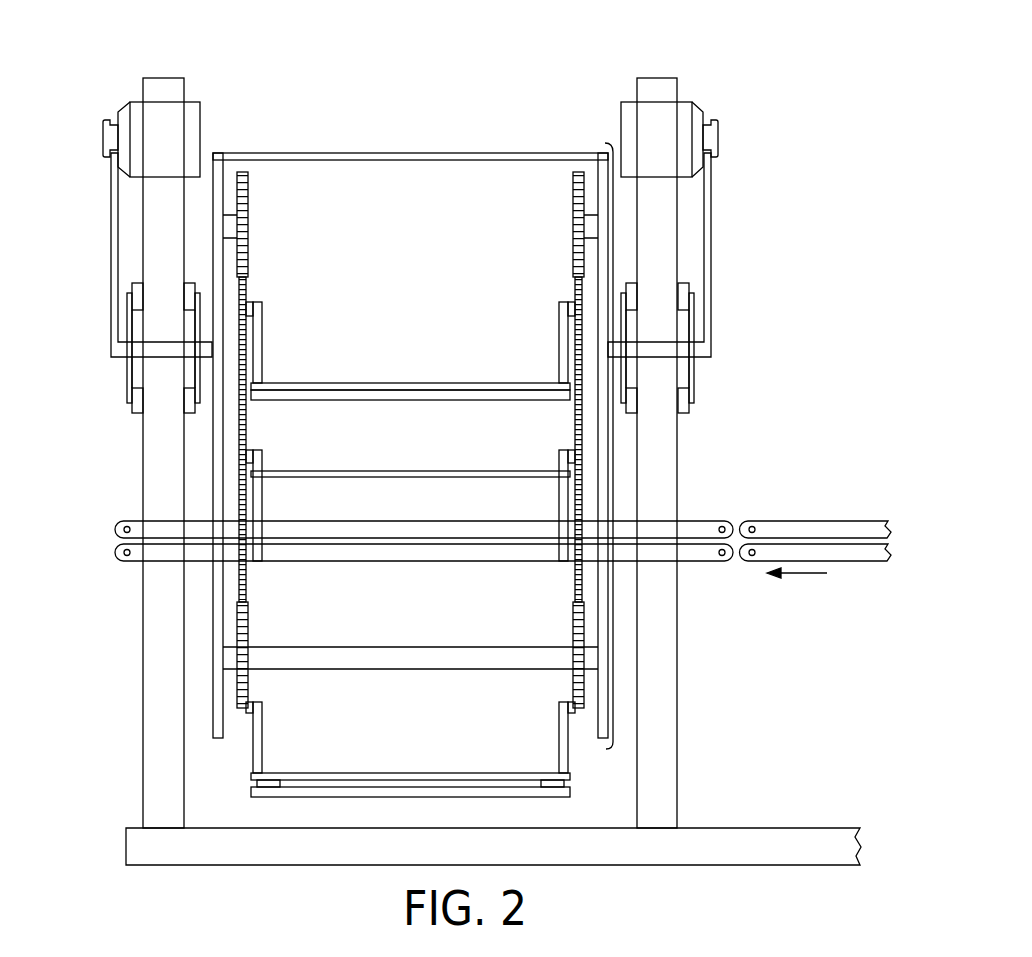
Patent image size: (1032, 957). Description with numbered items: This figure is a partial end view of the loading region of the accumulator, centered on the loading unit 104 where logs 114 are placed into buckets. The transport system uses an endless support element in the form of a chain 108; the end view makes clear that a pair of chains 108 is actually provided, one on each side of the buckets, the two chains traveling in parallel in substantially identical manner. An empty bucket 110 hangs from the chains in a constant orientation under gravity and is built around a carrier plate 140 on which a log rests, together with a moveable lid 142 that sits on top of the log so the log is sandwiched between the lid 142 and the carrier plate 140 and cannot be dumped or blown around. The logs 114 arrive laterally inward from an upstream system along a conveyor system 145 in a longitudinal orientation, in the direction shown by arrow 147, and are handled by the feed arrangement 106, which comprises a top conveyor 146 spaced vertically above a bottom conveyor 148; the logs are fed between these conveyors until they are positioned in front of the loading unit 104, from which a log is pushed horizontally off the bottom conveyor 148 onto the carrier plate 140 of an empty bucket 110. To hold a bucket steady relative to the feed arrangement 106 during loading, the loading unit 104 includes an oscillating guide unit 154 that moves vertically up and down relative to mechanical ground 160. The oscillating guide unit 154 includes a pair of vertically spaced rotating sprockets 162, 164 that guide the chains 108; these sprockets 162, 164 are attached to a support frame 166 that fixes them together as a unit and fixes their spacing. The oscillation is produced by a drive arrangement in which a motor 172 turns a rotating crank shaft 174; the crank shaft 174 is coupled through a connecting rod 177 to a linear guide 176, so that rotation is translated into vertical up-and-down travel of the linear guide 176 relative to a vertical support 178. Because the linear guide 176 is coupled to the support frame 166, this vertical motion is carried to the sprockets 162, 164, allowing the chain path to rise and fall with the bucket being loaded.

The loading unit 104 is at (740, 183).
The feed arrangement 106 is at (503, 603).
The endless support element (chain) 108 is at (245, 405).
The empty bucket 110 is at (411, 556).
The log 114 is at (503, 603).
The carrier plate 140 is at (420, 400).
The lid 142 is at (448, 387).
The conveyor system 145 is at (818, 483).
The top conveyor 146 is at (718, 518).
The arrow 147 is at (803, 576).
The bottom conveyor 148 is at (707, 558).
The oscillating guide unit 154 is at (615, 460).
The mechanical ground 160 is at (770, 838).
The sprocket (upper) 162 is at (247, 229).
The sprocket (lower) 164 is at (247, 618).
The support frame 166 is at (213, 712).
The motor 172 is at (193, 113).
The crank shaft 174 is at (103, 133).
The linear guide 176 is at (110, 372).
The connecting rod 177 is at (110, 232).
The vertical support 178 is at (143, 722).